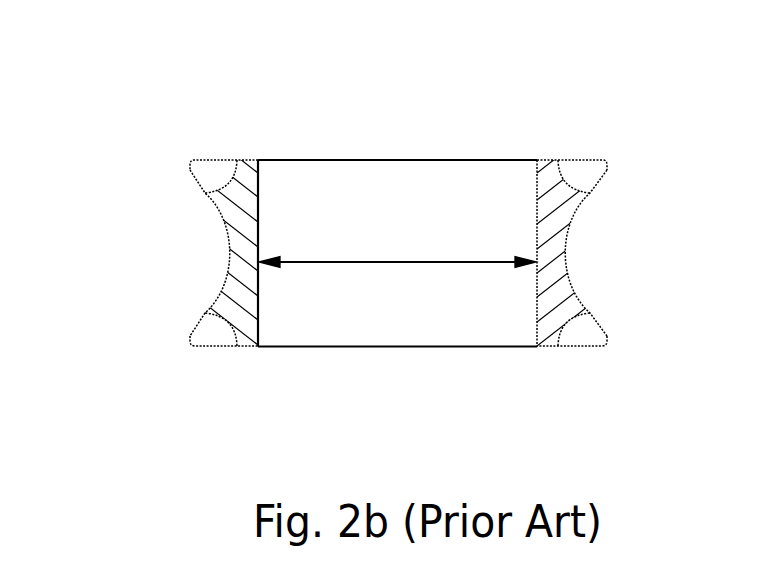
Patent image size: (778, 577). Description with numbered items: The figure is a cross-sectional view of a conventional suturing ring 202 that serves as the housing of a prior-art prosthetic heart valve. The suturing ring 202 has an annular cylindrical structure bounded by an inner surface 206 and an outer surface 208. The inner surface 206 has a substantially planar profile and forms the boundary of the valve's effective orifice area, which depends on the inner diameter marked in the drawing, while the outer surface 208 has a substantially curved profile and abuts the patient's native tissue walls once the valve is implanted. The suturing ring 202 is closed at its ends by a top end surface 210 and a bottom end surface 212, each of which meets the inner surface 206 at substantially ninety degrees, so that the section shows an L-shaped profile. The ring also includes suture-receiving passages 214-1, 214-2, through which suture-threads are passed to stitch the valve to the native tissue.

The suturing ring 202 is at (387, 239).
The inner surface 206 is at (263, 292).
The outer surface 208 is at (220, 296).
The top end surface 210 is at (368, 123).
The bottom end surface 212 is at (340, 385).
The suture-receiving passage 214-1 is at (228, 177).
The suture-receiving passage 214-2 is at (212, 332).